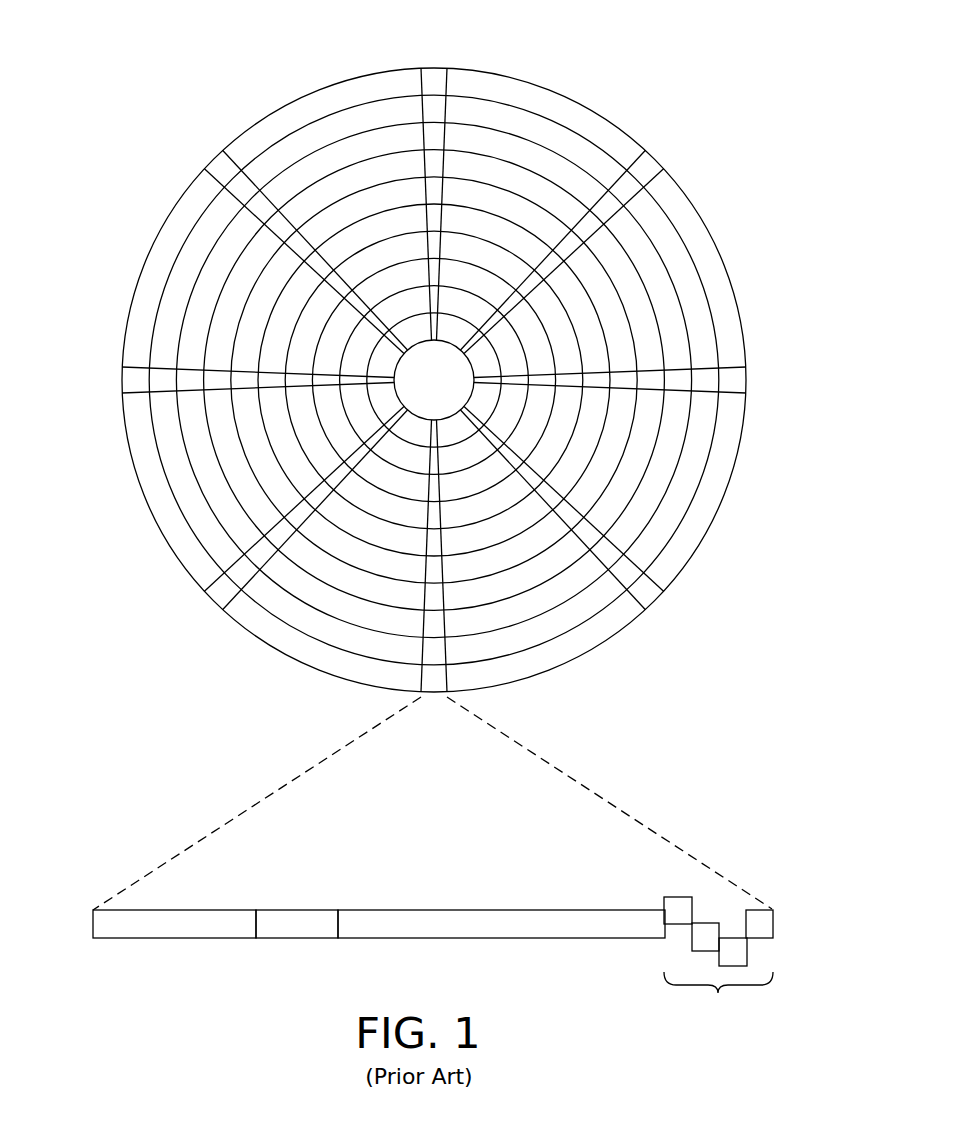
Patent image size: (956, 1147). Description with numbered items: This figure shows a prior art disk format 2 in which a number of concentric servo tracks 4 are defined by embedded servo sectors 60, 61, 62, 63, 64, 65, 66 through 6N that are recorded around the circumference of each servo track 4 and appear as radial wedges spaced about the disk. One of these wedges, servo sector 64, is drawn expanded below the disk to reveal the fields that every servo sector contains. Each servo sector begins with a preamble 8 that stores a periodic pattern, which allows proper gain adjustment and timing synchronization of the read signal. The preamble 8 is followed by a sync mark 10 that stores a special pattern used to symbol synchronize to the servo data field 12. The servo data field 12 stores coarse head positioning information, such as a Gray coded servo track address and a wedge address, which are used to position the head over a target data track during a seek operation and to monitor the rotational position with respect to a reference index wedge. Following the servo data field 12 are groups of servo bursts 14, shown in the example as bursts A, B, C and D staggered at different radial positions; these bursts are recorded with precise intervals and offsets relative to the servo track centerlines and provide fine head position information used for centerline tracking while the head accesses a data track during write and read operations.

The disk format 2 is at (204, 72).
The servo track 4 is at (539, 133).
The servo sector 60 is at (435, 77).
The servo sector 61 is at (645, 168).
The servo sector 62 is at (747, 382).
The servo sector 63 is at (645, 594).
The servo sector 64 is at (293, 765).
The servo sector 65 is at (217, 597).
The servo sector 66 is at (125, 380).
The servo sector 6N is at (218, 160).
The preamble 8 is at (157, 940).
The sync mark 10 is at (297, 940).
The servo data field 12 is at (490, 940).
The servo bursts 14 is at (654, 879).